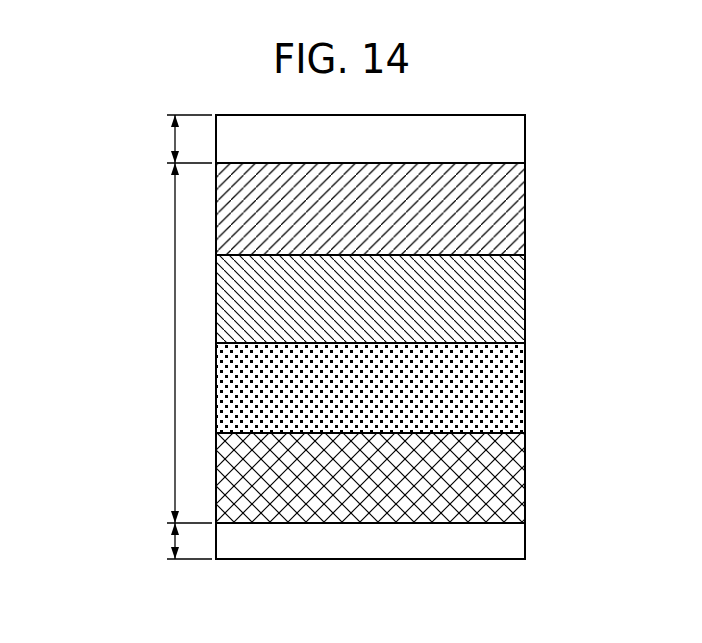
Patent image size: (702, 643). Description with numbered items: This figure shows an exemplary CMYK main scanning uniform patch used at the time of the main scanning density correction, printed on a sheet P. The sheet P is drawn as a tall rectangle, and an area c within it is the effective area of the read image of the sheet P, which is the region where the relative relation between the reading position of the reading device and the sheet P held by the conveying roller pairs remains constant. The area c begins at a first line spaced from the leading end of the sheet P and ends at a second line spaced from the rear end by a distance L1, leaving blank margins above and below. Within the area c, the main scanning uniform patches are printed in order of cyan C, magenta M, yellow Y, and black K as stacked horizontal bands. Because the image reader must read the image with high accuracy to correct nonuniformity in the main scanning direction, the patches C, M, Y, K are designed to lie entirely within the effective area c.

The sheet P is at (370, 559).
The cyan main scanning uniform patch C is at (370, 209).
The magenta main scanning uniform patch M is at (370, 299).
The yellow main scanning uniform patch Y is at (370, 388).
The black main scanning uniform patch K is at (370, 478).
The effective area c is at (167, 343).
The distance from rear end L1 is at (176, 541).